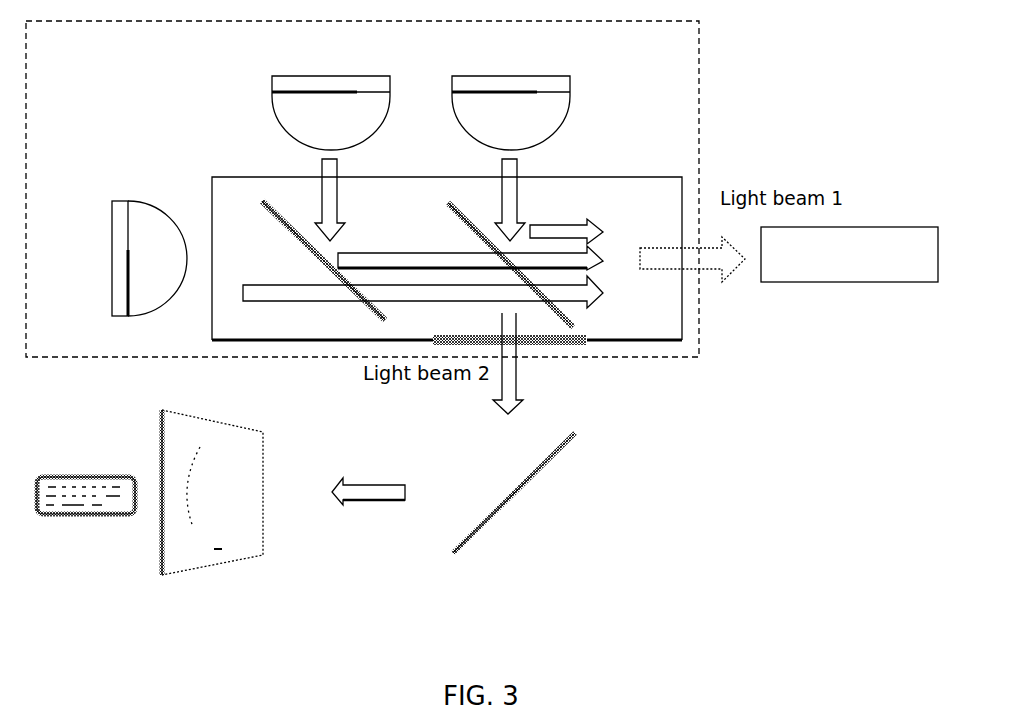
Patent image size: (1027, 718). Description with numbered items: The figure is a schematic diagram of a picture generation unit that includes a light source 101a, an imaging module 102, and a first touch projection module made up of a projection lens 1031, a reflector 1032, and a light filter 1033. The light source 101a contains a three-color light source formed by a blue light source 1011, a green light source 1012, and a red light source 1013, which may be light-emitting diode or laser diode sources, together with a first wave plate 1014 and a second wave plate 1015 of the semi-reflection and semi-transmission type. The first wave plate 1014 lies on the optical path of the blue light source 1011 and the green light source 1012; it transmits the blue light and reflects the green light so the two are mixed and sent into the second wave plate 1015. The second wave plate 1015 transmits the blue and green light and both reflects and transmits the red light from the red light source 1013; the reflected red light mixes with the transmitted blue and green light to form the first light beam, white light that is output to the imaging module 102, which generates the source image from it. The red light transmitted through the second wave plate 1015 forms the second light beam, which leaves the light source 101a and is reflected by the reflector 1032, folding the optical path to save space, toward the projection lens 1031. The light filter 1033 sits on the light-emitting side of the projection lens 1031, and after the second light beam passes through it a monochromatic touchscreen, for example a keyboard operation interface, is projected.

The light source 101a is at (230, 54).
The blue light source 1011 is at (117, 258).
The green light source 1012 is at (331, 137).
The red light source 1013 is at (511, 137).
The first wave plate 1014 is at (201, 144).
The second wave plate 1015 is at (581, 348).
The imaging module 102 is at (849, 254).
The projection lens 1031 is at (231, 519).
The reflector 1032 is at (514, 506).
The light filter 1033 is at (98, 545).